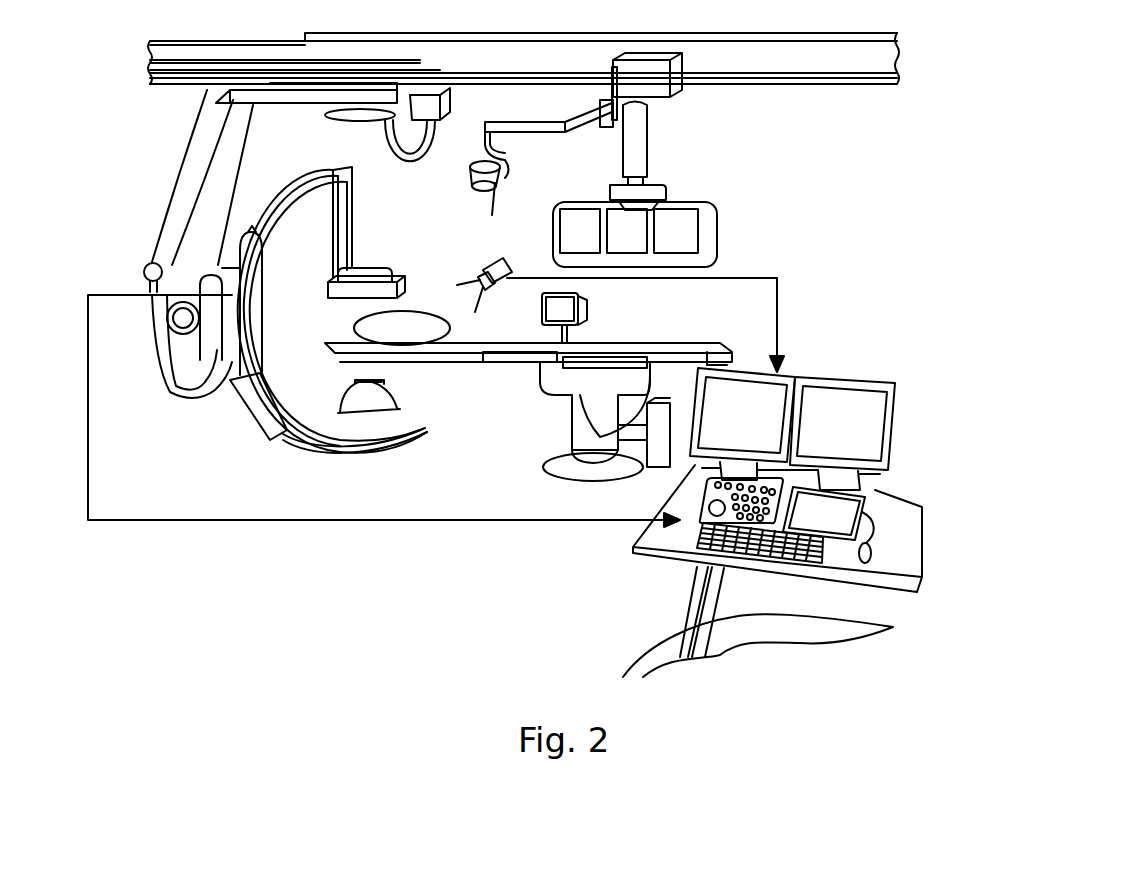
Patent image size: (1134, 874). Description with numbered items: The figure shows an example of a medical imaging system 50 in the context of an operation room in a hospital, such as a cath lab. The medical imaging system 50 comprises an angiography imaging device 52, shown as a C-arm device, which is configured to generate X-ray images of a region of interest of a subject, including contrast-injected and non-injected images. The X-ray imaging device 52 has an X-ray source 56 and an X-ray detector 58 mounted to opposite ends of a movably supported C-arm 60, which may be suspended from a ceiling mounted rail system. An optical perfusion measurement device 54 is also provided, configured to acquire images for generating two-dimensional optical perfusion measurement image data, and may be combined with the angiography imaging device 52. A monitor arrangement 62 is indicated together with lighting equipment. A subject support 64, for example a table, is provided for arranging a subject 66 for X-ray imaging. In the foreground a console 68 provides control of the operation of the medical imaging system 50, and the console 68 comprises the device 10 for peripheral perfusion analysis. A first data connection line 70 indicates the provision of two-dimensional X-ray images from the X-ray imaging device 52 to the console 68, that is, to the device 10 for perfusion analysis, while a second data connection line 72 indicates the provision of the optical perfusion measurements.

The device for perfusion analysis 10 is at (898, 474).
The medical imaging system 50 is at (784, 186).
The angiography imaging device 52 is at (245, 200).
The optical perfusion measurement device 54 is at (500, 248).
The X-ray source 56 is at (397, 437).
The X-ray detector 58 is at (370, 275).
The C-arm 60 is at (253, 410).
The monitor arrangement 62 is at (688, 205).
The subject support 64 is at (703, 342).
The subject 66 is at (405, 318).
The console 68 is at (905, 400).
The first data connection line 70 is at (297, 522).
The second data connection line 72 is at (782, 300).